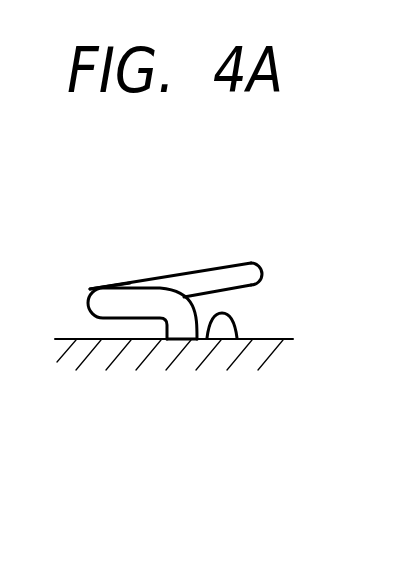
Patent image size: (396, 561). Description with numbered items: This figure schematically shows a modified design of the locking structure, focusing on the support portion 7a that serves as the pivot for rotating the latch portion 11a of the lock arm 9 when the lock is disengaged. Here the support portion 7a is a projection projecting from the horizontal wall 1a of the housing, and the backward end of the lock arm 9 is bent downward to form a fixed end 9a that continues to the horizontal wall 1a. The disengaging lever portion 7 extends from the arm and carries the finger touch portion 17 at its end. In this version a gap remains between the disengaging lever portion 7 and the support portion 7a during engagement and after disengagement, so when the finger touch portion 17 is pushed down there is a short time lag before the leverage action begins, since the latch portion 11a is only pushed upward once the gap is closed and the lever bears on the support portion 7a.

The horizontal wall portion 1a is at (158, 430).
The lock arm 9 is at (122, 312).
The fixed end 9a is at (180, 339).
The disengaging lever portion 7 is at (183, 275).
The finger touch portion 17 is at (229, 268).
The latch portion 11a is at (93, 288).
The support portion 7a is at (236, 317).